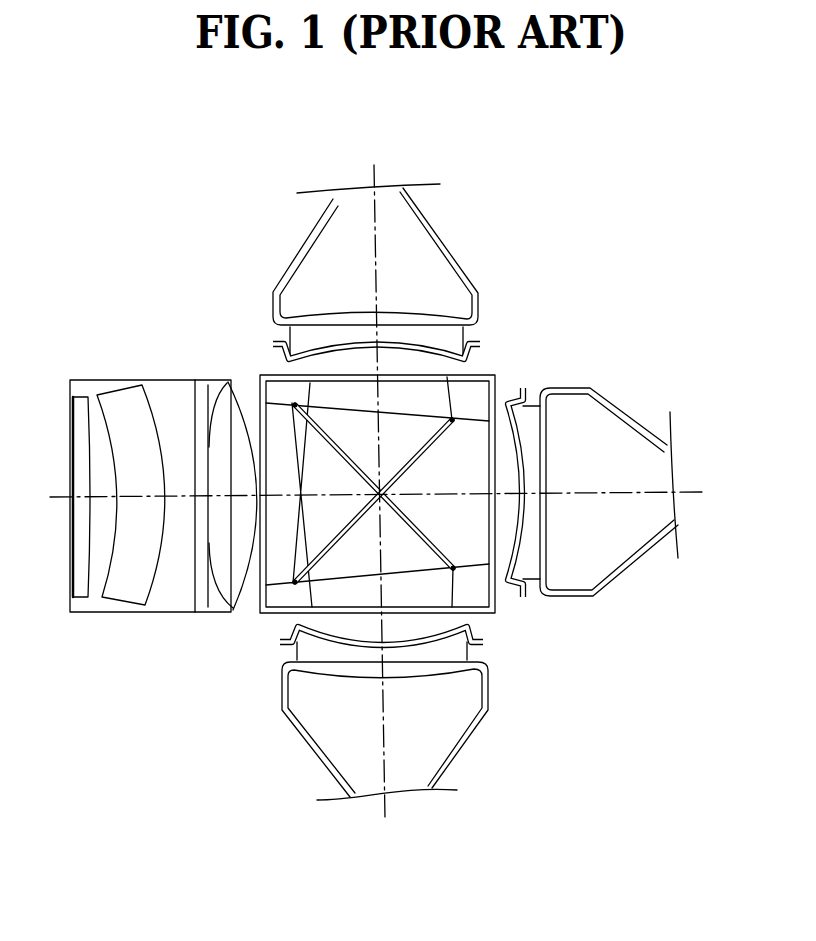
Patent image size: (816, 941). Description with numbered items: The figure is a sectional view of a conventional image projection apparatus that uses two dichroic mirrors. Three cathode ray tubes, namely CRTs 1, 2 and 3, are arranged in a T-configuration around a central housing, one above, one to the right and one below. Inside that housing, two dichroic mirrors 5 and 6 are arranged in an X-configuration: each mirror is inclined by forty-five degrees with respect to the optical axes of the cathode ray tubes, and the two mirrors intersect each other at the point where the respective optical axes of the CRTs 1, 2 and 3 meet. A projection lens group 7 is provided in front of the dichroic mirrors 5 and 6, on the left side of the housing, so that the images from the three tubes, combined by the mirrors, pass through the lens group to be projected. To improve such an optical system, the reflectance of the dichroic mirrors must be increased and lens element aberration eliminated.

The CRT 1 is at (462, 249).
The CRT 2 is at (593, 388).
The CRT 3 is at (483, 717).
The dichroic mirror 5 is at (427, 457).
The dichroic mirror 6 is at (338, 448).
The projection lens group 7 is at (123, 381).